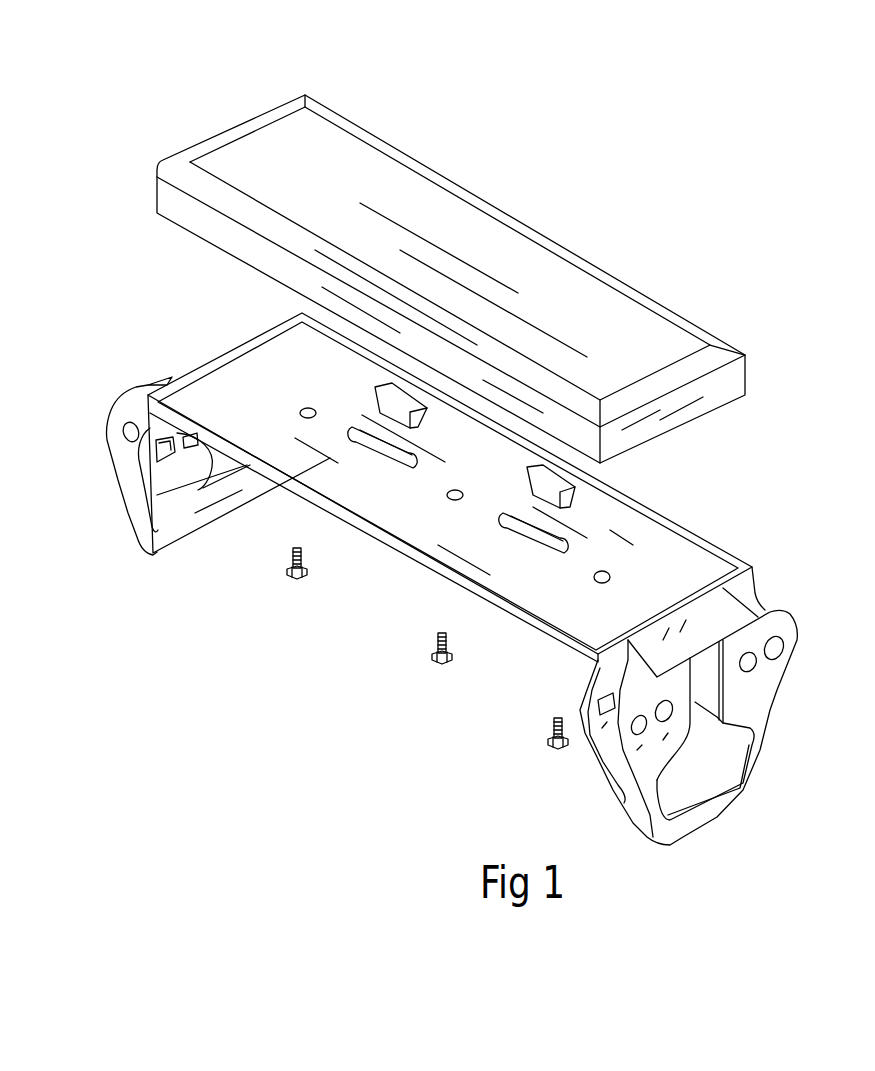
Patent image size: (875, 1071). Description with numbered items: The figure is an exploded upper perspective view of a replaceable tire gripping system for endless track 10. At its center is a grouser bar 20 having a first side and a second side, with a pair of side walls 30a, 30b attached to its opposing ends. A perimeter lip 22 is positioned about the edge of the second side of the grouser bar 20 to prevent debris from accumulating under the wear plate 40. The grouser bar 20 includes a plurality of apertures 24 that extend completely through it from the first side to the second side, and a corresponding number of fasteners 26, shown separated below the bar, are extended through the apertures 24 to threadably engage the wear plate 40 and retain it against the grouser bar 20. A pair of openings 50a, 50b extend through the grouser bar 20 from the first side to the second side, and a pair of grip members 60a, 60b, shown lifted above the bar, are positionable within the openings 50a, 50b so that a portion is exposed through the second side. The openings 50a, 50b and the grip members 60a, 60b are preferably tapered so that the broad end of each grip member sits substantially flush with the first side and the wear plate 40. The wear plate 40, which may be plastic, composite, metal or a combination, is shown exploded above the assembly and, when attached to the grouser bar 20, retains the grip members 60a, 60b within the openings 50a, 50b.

The replaceable tire gripping system for endless track 10 is at (790, 146).
The grouser bar 20 is at (683, 558).
The perimeter lip 22 is at (418, 552).
The apertures 24 is at (302, 418).
The fasteners 26 is at (294, 578).
The side wall 30a is at (190, 512).
The side wall 30b is at (763, 697).
The wear plate 40 is at (650, 320).
The opening 50a is at (390, 460).
The opening 50b is at (537, 538).
The grip member 60a is at (392, 395).
The grip member 60b is at (563, 481).